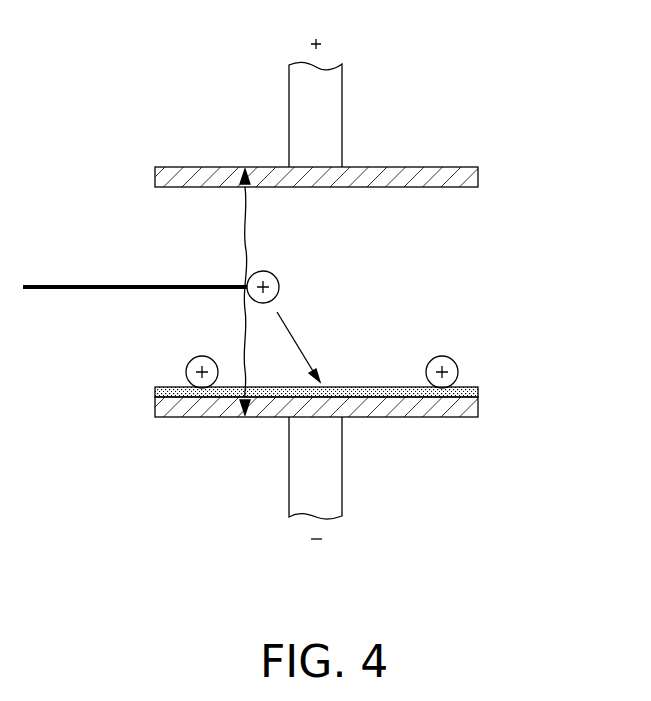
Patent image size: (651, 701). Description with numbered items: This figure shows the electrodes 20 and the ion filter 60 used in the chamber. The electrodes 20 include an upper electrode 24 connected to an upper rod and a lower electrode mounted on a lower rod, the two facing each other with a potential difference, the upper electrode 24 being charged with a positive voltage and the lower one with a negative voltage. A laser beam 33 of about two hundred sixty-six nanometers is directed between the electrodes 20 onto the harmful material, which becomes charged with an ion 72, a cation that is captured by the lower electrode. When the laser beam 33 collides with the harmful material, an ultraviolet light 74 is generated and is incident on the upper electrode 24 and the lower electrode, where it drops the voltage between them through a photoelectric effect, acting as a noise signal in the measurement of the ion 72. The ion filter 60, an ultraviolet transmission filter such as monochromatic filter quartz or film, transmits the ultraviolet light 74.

The electrodes 20 is at (553, 160).
The upper electrode 24 is at (480, 174).
The laser beam 33 is at (75, 285).
The ion filter 60 is at (155, 390).
The ion 72 is at (442, 356).
The ultraviolet light 74 is at (245, 318).